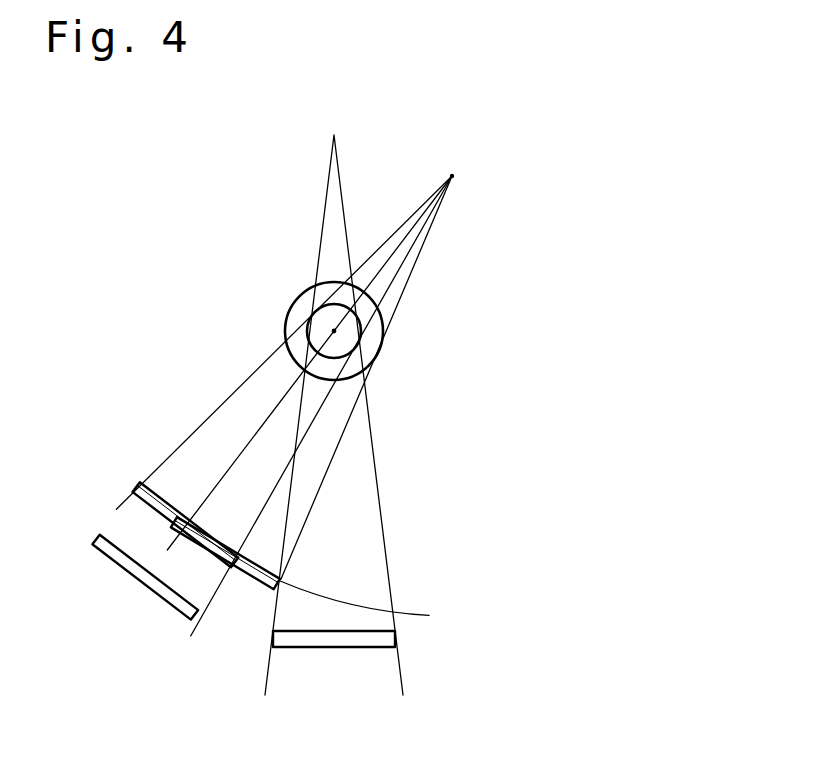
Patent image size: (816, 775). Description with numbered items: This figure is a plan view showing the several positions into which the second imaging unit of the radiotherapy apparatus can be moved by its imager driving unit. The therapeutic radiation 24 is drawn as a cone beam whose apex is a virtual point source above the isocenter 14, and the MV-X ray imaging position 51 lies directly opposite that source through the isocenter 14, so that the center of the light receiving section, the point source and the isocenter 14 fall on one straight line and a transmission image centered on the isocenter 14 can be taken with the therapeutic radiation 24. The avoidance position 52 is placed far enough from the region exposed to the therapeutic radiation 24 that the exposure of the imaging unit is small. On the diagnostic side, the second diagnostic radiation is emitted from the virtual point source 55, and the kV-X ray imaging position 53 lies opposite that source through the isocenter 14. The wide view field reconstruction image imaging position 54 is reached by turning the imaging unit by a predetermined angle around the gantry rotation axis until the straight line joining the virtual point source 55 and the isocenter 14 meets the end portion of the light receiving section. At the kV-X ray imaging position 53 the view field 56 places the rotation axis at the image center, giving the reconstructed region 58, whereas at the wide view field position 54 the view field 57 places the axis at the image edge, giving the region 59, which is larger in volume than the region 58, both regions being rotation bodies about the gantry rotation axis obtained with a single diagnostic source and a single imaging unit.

The isocenter 14 is at (333, 331).
The therapeutic radiation 24 is at (327, 197).
The MV-X ray imaging position 51 is at (353, 648).
The avoidance position 52 is at (138, 580).
The kV-X ray imaging position 53 is at (160, 497).
The wide view field reconstruction image imaging position 54 is at (255, 583).
The virtual point source 55 is at (453, 174).
The view field 56 is at (398, 252).
The view field 57 is at (421, 232).
The region 58 is at (348, 366).
The region 59 is at (384, 322).